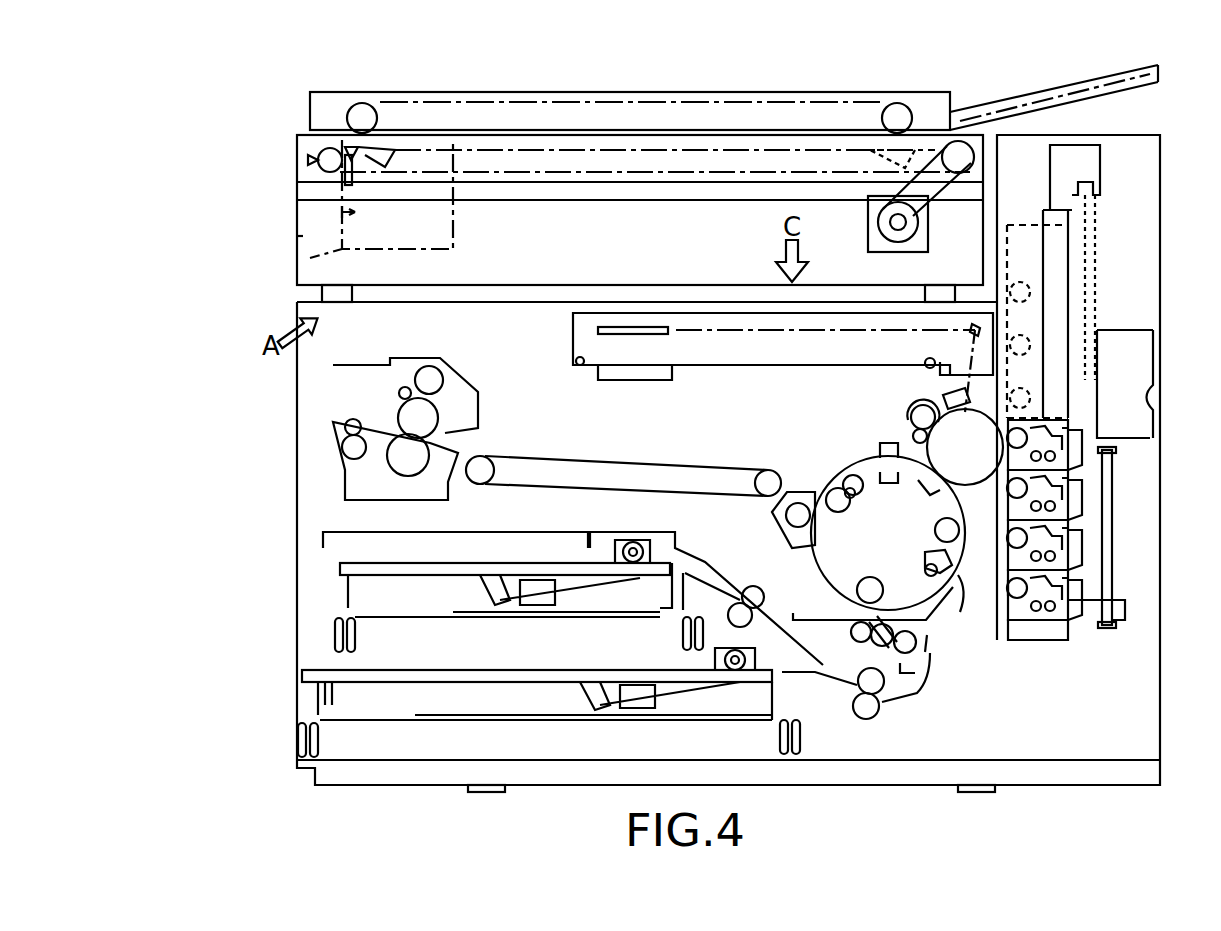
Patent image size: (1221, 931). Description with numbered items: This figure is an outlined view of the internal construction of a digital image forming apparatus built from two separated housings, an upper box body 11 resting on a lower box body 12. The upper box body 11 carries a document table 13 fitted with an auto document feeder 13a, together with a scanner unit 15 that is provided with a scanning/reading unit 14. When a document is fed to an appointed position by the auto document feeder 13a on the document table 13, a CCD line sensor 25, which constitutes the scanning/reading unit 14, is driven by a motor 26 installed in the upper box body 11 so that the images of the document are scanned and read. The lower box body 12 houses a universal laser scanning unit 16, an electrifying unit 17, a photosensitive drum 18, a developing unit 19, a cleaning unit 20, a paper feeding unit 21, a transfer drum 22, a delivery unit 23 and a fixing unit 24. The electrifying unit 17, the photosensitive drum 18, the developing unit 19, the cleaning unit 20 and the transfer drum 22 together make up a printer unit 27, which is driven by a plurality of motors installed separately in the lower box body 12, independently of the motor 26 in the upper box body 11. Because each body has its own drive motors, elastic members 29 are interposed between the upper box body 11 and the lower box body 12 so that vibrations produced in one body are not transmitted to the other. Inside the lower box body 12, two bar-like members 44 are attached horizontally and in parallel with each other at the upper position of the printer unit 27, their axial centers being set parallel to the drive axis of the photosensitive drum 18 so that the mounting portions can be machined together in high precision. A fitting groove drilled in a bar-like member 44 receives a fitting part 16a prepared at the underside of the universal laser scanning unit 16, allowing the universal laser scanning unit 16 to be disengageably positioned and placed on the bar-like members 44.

The upper box body 11 is at (250, 181).
The lower box body 12 is at (275, 500).
The document table 13 is at (297, 155).
The auto document feeder 13a is at (558, 92).
The scanning/reading unit 14 is at (310, 258).
The scanner unit 15 is at (297, 236).
The universal laser scanning unit 16 is at (573, 325).
The fitting part 16a is at (593, 372).
The electrifying unit 17 is at (905, 397).
The photosensitive drum 18 is at (972, 486).
The developing unit 19 is at (1095, 488).
The cleaning unit 20 is at (888, 428).
The paper feeding unit 21 is at (308, 625).
The transfer drum 22 is at (952, 588).
The delivery unit 23 is at (548, 452).
The fixing unit 24 is at (310, 394).
The CCD line sensor 25 is at (342, 213).
The motor 26 is at (925, 233).
The printer unit 27 is at (968, 678).
The elastic members 29 is at (360, 302).
The bar-like members 44 is at (576, 362).